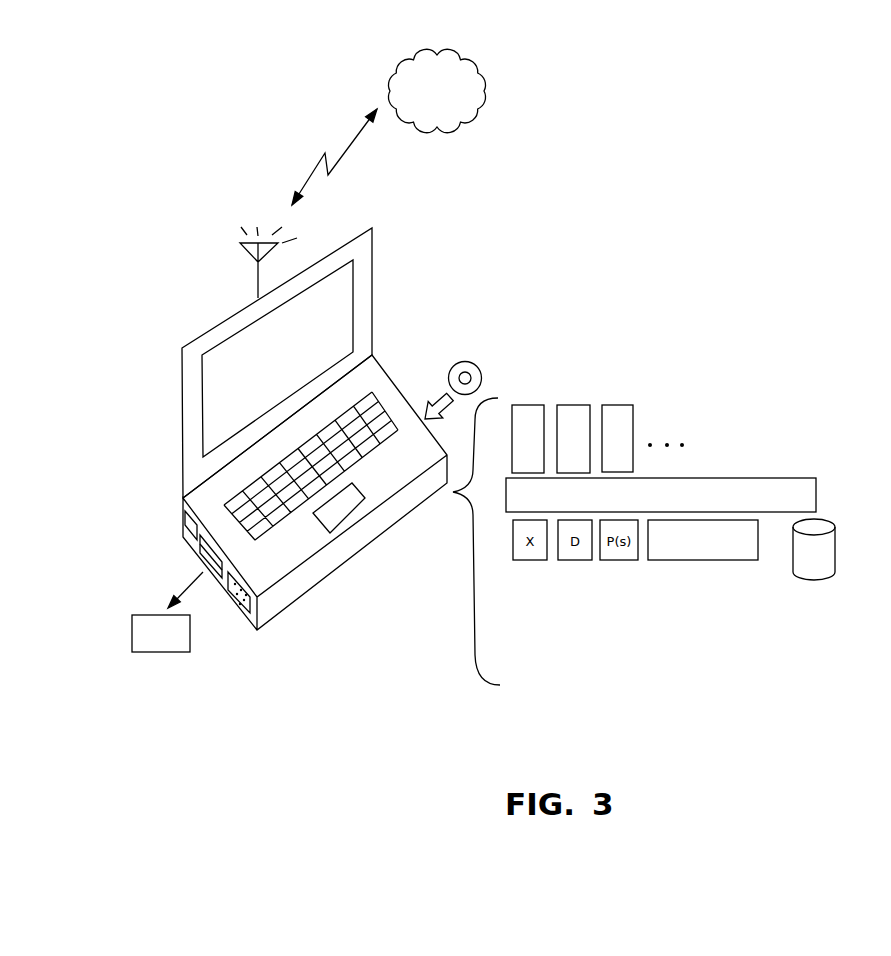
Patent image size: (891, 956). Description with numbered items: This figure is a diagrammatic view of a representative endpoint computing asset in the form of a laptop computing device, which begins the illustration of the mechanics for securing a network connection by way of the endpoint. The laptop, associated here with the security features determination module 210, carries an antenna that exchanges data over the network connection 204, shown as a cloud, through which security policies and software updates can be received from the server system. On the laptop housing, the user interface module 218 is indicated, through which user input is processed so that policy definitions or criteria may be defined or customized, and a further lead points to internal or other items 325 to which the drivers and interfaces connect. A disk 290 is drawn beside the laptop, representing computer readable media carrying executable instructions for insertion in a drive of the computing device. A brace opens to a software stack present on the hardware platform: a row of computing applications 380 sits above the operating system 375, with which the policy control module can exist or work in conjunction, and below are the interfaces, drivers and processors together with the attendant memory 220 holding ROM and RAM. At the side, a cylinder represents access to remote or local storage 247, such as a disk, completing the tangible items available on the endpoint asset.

The network connection 204 is at (474, 52).
The security features determination module 210 is at (263, 428).
The user interface module 218 is at (178, 500).
The disks 290 is at (456, 363).
The internal or other items 325 is at (173, 652).
The computing applications 380 is at (777, 410).
The operating system 375 is at (816, 487).
The attendant memory 220 is at (662, 561).
The remote or local storage 247 is at (818, 582).